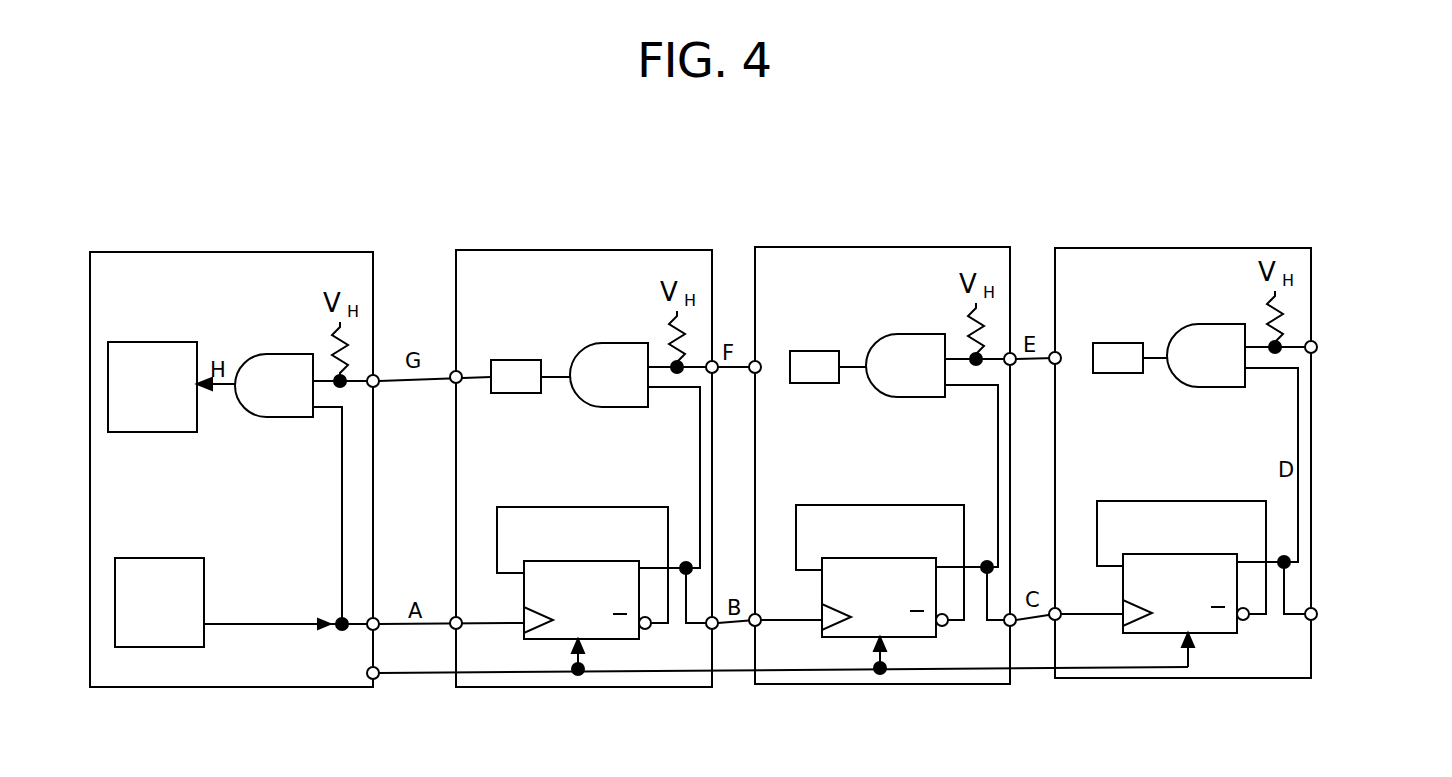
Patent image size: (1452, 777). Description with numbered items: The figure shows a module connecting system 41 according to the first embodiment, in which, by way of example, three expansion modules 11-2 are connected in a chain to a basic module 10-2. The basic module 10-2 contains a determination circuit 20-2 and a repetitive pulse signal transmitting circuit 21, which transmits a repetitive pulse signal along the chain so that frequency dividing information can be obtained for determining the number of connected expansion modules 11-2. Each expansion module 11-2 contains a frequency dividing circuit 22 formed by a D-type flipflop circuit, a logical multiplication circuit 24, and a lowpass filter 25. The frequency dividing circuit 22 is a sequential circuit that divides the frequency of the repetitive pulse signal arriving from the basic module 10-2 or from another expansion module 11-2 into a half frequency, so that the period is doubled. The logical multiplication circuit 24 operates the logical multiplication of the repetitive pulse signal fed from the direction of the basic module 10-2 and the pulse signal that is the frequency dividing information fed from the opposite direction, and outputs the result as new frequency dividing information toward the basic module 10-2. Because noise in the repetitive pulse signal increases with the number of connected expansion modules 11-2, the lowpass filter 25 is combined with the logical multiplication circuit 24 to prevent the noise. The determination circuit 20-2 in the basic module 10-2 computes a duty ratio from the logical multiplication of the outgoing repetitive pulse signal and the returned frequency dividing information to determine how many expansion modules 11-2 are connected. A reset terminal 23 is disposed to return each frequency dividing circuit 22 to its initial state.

The basic module 10-2 is at (242, 252).
The determination circuit 20-2 is at (143, 342).
The repetitive pulse signal transmitting circuit 21 is at (158, 647).
The frequency dividing circuit 22 is at (548, 642).
The reset terminal 23 is at (373, 682).
The logical multiplication circuit 24 is at (267, 354).
The lowpass filter 25 is at (508, 360).
The expansion module 11-2 is at (610, 250).
The module connecting system 41 is at (1326, 232).